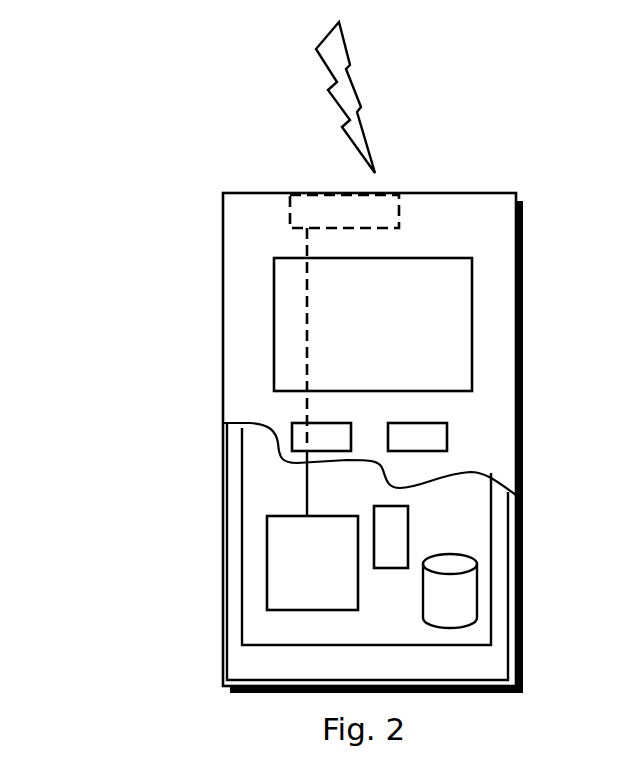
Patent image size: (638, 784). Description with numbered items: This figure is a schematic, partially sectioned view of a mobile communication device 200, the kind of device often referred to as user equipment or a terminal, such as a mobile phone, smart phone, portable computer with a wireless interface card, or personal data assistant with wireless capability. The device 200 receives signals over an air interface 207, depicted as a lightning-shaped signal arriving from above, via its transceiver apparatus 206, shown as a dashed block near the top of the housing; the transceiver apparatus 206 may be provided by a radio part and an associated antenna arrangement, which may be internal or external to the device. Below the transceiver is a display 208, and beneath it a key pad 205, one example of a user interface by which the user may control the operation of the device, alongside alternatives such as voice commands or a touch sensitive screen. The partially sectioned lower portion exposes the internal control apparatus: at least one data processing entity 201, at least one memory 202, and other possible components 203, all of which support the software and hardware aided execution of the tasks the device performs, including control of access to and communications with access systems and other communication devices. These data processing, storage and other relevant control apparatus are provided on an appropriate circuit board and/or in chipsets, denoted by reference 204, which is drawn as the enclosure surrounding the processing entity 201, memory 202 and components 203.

The communication device 200 is at (223, 233).
The data processing entity 201 is at (274, 547).
The memory 202 is at (445, 602).
The other possible components 203 is at (391, 522).
The circuit board and/or chipsets 204 is at (267, 628).
The key pad 205 is at (296, 438).
The transceiver apparatus 206 is at (388, 206).
The air interface 207 is at (374, 127).
The display 208 is at (289, 311).